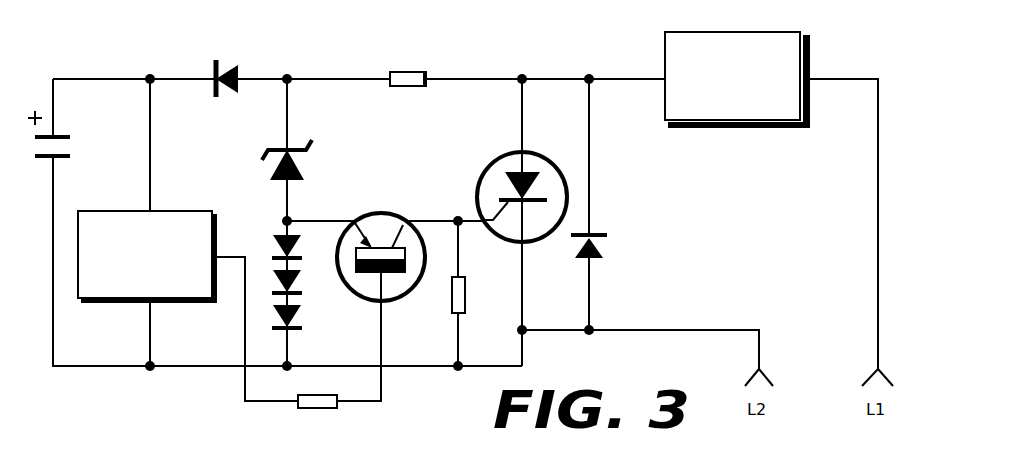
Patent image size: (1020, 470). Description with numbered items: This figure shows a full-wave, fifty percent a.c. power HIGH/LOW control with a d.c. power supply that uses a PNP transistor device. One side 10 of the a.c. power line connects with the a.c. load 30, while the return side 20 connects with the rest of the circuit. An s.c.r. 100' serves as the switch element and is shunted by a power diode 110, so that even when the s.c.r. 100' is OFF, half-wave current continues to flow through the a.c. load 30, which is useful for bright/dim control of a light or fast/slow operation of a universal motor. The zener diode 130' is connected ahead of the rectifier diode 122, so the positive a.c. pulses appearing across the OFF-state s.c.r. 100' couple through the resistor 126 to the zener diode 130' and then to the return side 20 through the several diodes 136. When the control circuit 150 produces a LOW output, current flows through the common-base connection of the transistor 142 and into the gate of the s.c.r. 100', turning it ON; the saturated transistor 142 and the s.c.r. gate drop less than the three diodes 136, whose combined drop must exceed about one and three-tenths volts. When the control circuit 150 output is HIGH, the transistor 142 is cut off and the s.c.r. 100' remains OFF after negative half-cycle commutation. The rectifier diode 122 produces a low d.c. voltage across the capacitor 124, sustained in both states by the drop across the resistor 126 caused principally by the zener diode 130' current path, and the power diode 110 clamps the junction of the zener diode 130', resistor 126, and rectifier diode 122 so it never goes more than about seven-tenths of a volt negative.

The rectifier diode 122 is at (241, 67).
The resistor 126 is at (419, 70).
The a.c. load 30 is at (776, 45).
The capacitor 124 is at (73, 150).
The control circuit 150 is at (193, 229).
The zener diode 130' is at (318, 150).
The transistor 142 is at (389, 211).
The silicon controlled rectifier 100' is at (502, 176).
The power diode 110 is at (609, 246).
The several diodes 136 is at (304, 279).
The return side of the a.c. power line 20 is at (716, 328).
The side of the a.c. power line 10 is at (881, 334).